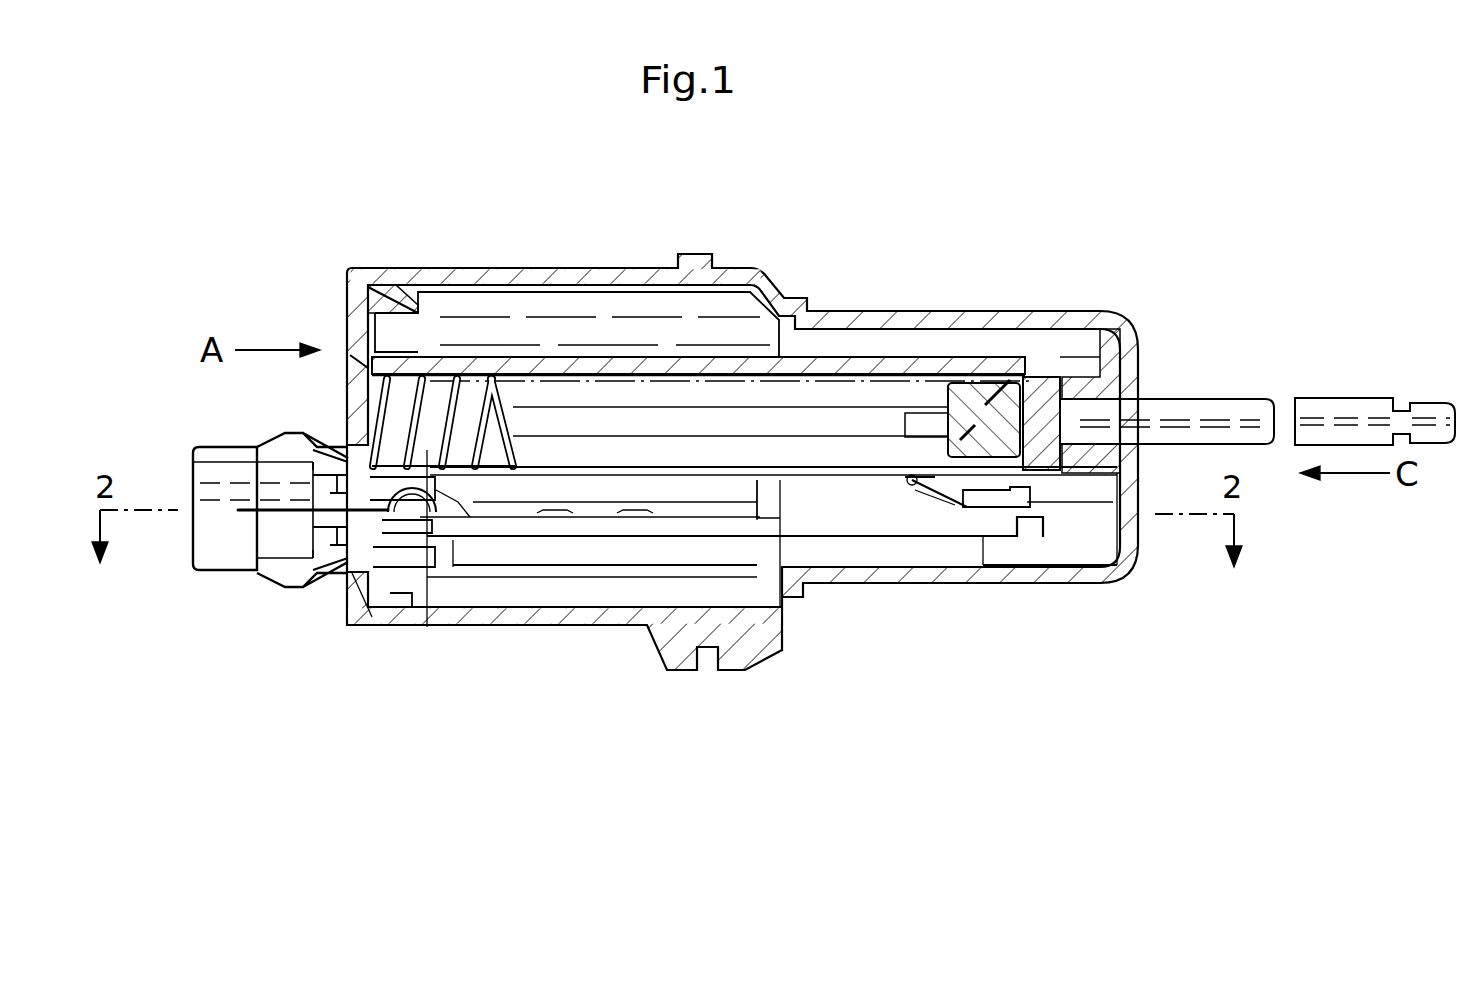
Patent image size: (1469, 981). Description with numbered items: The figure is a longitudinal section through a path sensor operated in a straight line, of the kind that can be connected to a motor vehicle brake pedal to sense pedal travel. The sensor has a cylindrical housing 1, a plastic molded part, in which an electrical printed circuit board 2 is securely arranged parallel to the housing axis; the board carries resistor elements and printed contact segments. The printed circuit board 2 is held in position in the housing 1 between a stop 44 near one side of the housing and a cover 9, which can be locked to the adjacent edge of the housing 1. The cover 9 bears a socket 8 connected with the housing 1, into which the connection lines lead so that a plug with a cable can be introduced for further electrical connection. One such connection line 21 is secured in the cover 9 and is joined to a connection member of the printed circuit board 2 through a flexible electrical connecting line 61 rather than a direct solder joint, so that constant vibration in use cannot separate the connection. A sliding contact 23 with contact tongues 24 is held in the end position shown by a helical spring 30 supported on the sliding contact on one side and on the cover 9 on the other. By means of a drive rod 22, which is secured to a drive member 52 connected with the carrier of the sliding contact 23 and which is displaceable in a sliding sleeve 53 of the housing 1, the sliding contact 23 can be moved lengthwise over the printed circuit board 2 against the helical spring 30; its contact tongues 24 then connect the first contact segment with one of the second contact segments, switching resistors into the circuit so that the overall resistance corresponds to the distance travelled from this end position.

The housing 1 is at (570, 265).
The printed circuit board 2 is at (600, 523).
The socket 8 is at (200, 445).
The cover 9 is at (344, 335).
The connection line 21 is at (257, 500).
The drive rod 22 is at (1240, 410).
The sliding contact 23 is at (978, 412).
The contact tongues 24 is at (987, 500).
The spring 30 is at (468, 408).
The stop 44 is at (1047, 517).
The drive member 52 is at (1060, 340).
The sliding sleeve 53 is at (1123, 326).
The flexible electrical connecting line 61 is at (440, 487).